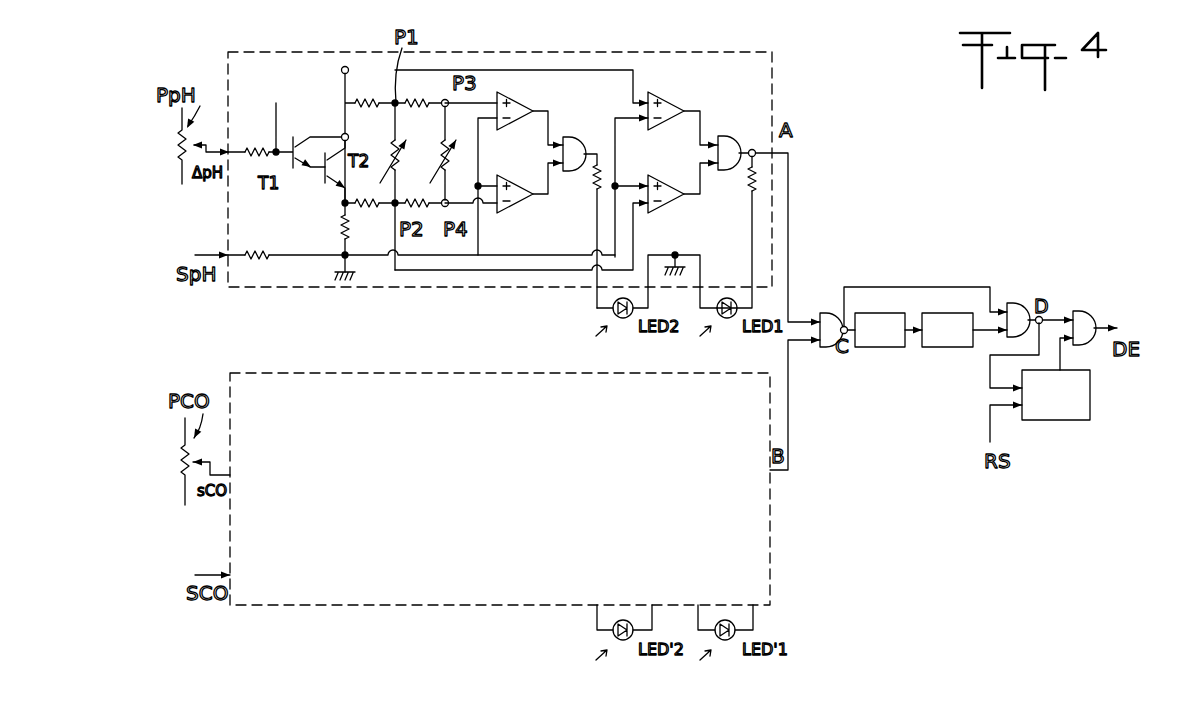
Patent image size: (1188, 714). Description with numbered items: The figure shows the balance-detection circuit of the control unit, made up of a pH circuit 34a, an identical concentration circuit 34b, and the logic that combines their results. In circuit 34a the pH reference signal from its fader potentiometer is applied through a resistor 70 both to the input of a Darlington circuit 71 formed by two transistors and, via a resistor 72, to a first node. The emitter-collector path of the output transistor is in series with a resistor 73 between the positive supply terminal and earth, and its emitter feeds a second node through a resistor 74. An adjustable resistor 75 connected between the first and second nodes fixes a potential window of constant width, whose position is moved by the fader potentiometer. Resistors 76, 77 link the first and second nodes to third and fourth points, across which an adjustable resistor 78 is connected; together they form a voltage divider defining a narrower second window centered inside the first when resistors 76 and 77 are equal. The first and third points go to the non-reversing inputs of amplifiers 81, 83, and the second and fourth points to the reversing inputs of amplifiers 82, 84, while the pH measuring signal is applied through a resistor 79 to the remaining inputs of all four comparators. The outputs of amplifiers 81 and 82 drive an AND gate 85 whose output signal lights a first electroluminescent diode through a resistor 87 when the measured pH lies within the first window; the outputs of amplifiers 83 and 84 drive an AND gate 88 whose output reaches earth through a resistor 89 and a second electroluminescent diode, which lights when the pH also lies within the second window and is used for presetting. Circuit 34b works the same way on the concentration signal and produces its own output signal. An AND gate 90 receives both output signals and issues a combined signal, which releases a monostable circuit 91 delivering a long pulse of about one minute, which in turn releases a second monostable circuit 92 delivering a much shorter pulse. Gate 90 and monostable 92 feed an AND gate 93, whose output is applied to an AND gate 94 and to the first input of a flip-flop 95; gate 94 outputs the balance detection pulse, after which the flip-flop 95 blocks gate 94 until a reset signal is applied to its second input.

The circuit 34a is at (300, 287).
The circuit 34b is at (400, 373).
The resistor 70 is at (256, 150).
The Darlington circuit 71 is at (323, 130).
The resistor 72 is at (370, 136).
The resistor 73 is at (341, 228).
The resistor 74 is at (370, 187).
The adjustable resistor 75 is at (390, 145).
The resistor 76 is at (422, 87).
The resistor 77 is at (422, 187).
The adjustable resistor 78 is at (442, 145).
The resistor 79 is at (262, 242).
The amplifier 81 is at (668, 93).
The amplifier 82 is at (659, 184).
The amplifier 83 is at (531, 93).
The amplifier 84 is at (531, 185).
The AND type gate 85 is at (729, 137).
The resistor 87 is at (748, 190).
The AND-type gate 88 is at (578, 135).
The resistor 89 is at (594, 190).
The AND-type gate 90 is at (826, 311).
The monostable circuit 91 is at (881, 347).
The second monostable circuit 92 is at (947, 347).
The AND-type gate 93 is at (1017, 303).
The AND-type gate 94 is at (1086, 313).
The flip-flop 95 is at (1073, 420).